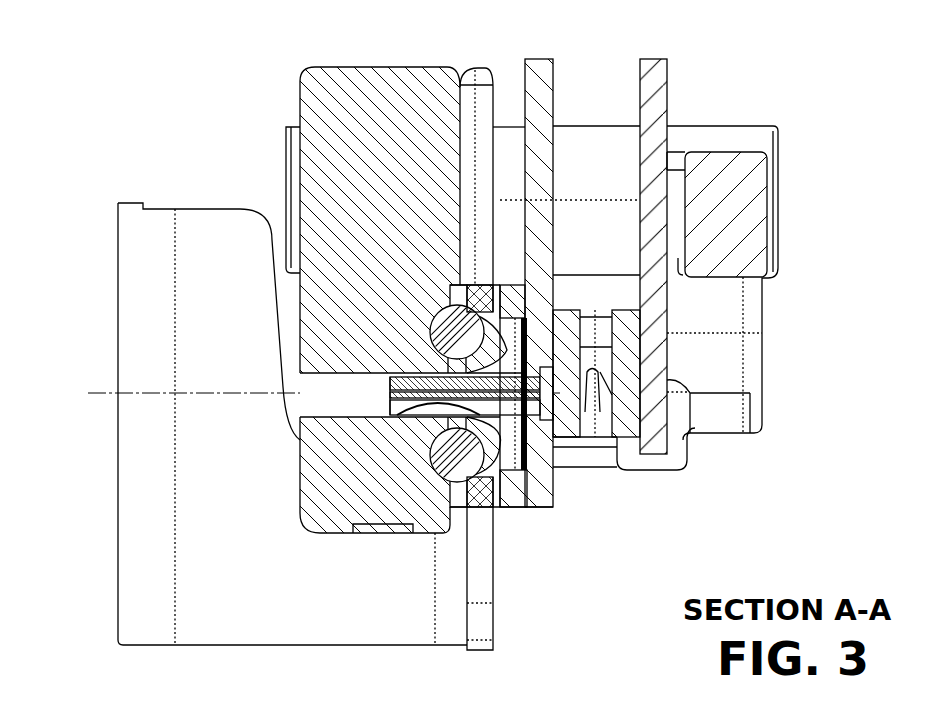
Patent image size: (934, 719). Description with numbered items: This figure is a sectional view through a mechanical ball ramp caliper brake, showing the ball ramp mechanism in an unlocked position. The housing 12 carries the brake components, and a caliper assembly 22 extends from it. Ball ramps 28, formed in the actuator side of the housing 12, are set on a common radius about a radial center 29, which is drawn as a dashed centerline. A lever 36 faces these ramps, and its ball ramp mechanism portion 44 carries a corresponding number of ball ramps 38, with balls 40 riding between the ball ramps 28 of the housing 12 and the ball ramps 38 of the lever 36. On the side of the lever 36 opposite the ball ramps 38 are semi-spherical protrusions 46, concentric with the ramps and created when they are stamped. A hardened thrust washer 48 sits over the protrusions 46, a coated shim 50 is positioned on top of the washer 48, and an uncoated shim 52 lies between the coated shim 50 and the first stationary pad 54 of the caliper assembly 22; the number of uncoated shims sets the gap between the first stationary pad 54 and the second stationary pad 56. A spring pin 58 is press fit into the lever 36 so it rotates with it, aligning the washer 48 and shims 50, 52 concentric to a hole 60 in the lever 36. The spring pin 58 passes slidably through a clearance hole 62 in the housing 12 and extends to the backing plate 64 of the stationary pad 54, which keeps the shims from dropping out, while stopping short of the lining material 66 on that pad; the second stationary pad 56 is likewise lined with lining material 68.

The housing 12 is at (301, 70).
The caliper assembly 22 is at (712, 108).
The ball ramps 28 is at (446, 474).
The radial center 29 is at (93, 395).
The lever 36 is at (106, 465).
The ball ramps 38 is at (478, 345).
The balls 40 is at (443, 491).
The ball ramp mechanism portion 44 is at (464, 525).
The semi-spherical protrusions 46 is at (488, 467).
The thrust washer 48 is at (512, 494).
The coated shim 50 is at (525, 494).
The uncoated shim 52 is at (543, 477).
The first stationary pad 54 is at (540, 55).
The second stationary pad 56 is at (660, 55).
The spring pin 58 is at (552, 392).
The hole 60 is at (402, 410).
The hole 62 is at (307, 376).
The backing plate 64 is at (522, 78).
The lining material 66 is at (570, 327).
The lining material 68 is at (633, 325).